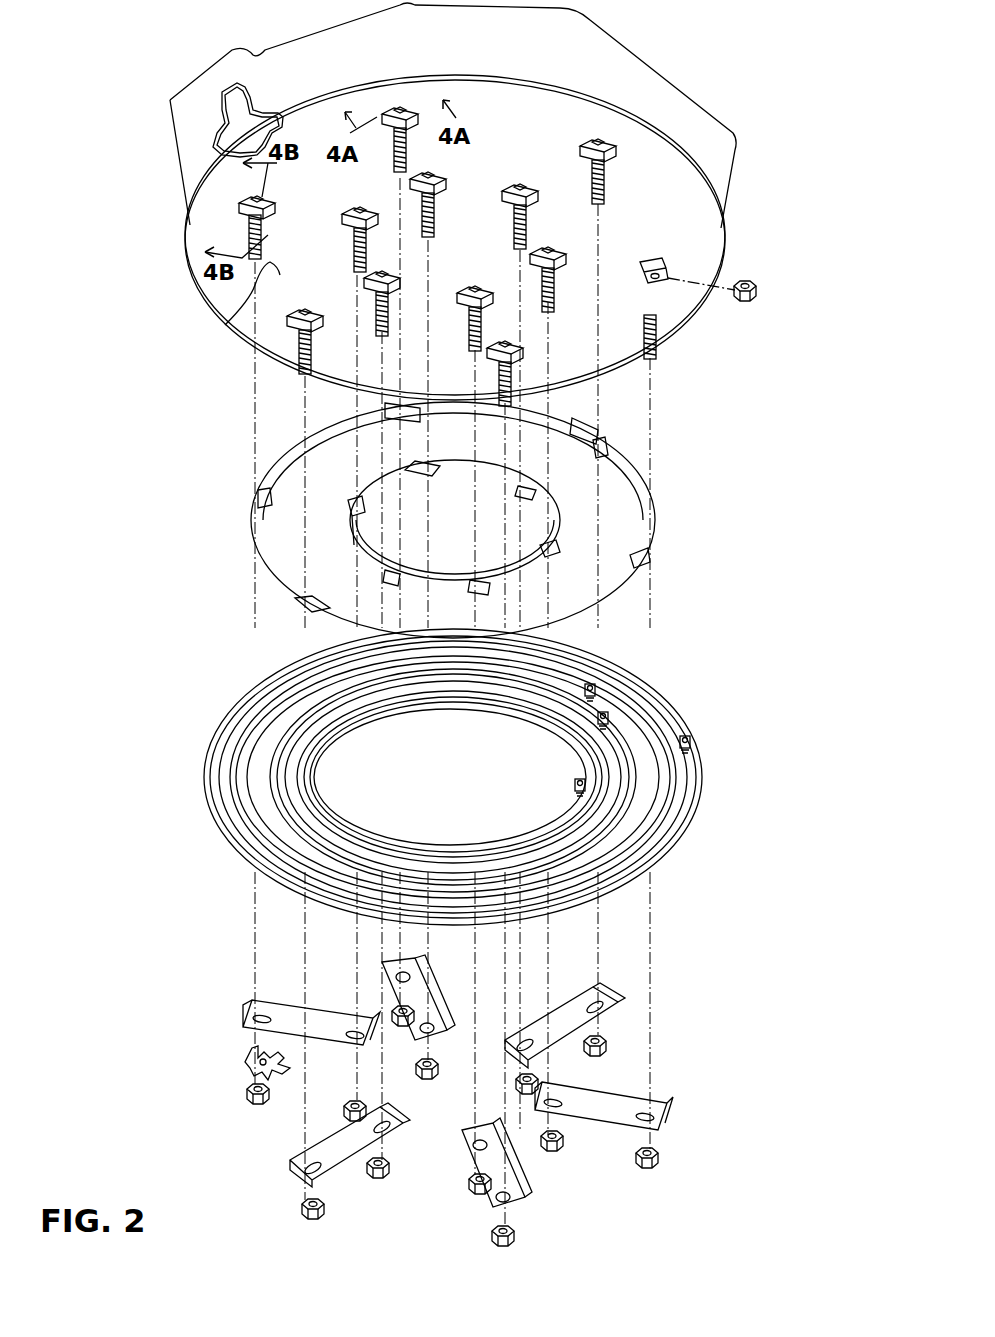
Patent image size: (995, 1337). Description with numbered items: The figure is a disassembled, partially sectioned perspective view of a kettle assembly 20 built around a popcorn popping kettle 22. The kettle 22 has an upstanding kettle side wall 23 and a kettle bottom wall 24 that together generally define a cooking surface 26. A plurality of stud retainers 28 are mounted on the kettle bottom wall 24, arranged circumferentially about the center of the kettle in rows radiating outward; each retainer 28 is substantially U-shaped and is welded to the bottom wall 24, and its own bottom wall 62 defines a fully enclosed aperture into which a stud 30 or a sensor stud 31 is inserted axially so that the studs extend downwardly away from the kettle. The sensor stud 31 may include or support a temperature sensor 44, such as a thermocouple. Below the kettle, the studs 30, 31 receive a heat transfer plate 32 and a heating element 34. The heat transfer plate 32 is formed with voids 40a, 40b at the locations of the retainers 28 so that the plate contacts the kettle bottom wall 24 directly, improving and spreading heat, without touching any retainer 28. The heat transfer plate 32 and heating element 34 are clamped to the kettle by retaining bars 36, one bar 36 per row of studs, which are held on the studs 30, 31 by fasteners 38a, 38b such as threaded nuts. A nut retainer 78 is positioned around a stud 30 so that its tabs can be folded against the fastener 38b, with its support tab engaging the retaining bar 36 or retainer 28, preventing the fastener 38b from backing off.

The kettle assembly 20 is at (108, 82).
The popcorn popping kettle 22 is at (207, 72).
The kettle side wall 23 is at (605, 49).
The kettle bottom wall 24 is at (548, 126).
The cooking surface 26 is at (222, 140).
The stud retainer 28 is at (392, 112).
The stud 30 is at (406, 152).
The sensor stud 31 is at (245, 222).
The heat transfer plate 32 is at (287, 450).
The heating element 34 is at (210, 775).
The retaining bar 36 is at (252, 1008).
The fastener 38a is at (400, 108).
The fastener 38b is at (345, 1112).
The void 40a is at (350, 512).
The void 40b is at (258, 498).
The temperature sensor 44 is at (239, 305).
The bottom wall 62 is at (664, 268).
The nut retainer 78 is at (250, 1056).